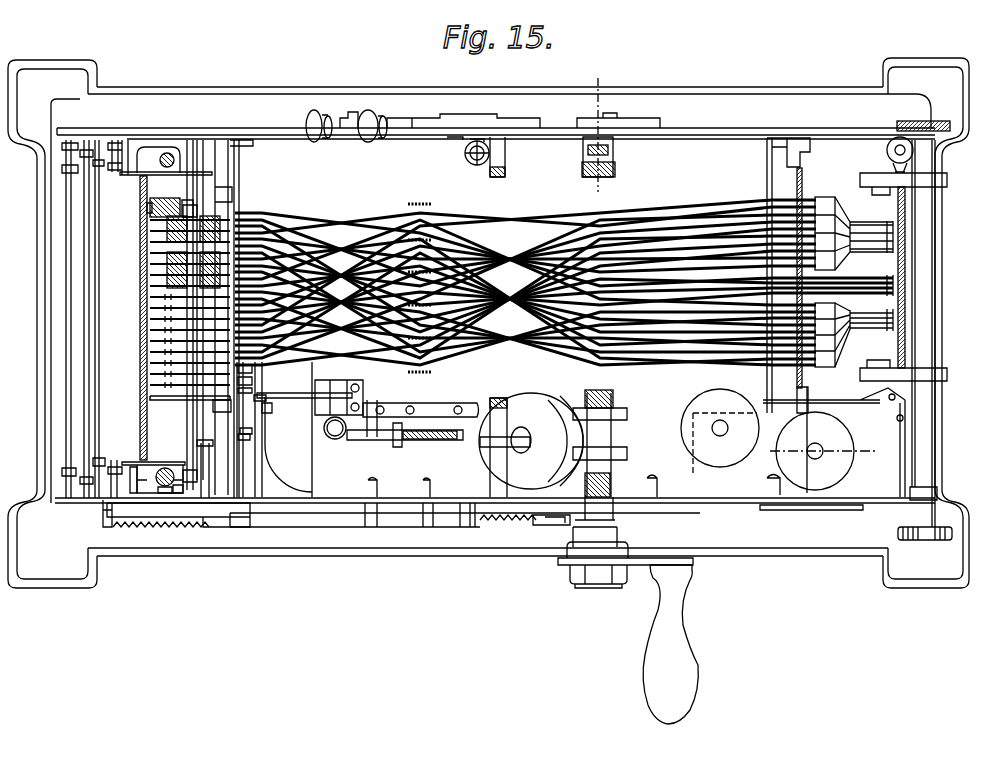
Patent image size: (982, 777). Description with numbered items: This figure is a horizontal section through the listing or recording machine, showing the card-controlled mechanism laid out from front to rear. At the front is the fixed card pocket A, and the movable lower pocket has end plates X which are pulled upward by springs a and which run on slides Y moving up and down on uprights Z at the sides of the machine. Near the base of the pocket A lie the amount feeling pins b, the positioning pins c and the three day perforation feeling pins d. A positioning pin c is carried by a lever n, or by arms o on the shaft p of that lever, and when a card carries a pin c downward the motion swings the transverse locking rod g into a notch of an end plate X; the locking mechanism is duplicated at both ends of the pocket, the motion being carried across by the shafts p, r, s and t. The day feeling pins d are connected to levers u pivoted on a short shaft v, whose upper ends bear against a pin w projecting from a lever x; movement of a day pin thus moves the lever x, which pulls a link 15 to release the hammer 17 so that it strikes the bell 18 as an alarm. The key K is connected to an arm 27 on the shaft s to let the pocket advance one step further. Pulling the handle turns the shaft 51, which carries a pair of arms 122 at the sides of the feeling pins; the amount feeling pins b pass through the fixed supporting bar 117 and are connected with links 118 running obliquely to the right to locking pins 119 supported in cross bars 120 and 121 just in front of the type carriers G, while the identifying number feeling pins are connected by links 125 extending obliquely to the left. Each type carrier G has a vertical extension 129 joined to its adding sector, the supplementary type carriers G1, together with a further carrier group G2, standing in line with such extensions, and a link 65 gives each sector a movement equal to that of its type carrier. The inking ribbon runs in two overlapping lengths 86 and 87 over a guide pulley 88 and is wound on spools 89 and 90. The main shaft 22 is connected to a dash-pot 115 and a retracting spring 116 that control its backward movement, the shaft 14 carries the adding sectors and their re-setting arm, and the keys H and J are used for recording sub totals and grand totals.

The end plates X is at (143, 172).
The lever n is at (192, 152).
The key H is at (307, 124).
The key J is at (368, 110).
The fixed supporting bar 117 is at (236, 167).
The link 65 is at (420, 207).
The retracting spring 116 is at (467, 165).
The links 125 is at (655, 194).
The cross bar 120 is at (766, 152).
The cross bar 121 is at (797, 183).
The guide pulley 88 is at (887, 152).
The inking ribbon length 87 is at (906, 203).
The inking ribbon length 86 is at (905, 201).
The type carriers G is at (868, 222).
The supplementary type carriers G1 is at (886, 252).
The contact block G2 is at (867, 330).
The vertical extension 129 is at (805, 278).
The links 118 is at (630, 372).
The main shaft 22 is at (613, 406).
The shaft 14 is at (605, 487).
The locking pins 119 is at (780, 380).
The spool 89 is at (720, 432).
The spool 90 is at (822, 451).
The dash-pot 115 is at (531, 445).
The link 15 is at (340, 393).
The hammer 17 is at (345, 433).
The arms 122 is at (245, 438).
The bell 18 is at (297, 477).
The shaft 51 is at (225, 440).
The pin w is at (255, 378).
The levers u is at (258, 393).
The lever x is at (270, 413).
The short shaft v is at (243, 432).
The transverse rod g is at (117, 177).
The positioning pins c is at (150, 203).
The arms o is at (175, 197).
The amount feeling pins b is at (146, 255).
The pocket A is at (140, 293).
The day perforation feeling pins d is at (153, 372).
The shaft r is at (140, 409).
The shaft s is at (88, 443).
The shaft t is at (66, 436).
The shaft p is at (192, 412).
The springs a is at (205, 463).
The arm 27 is at (103, 498).
The slides Y is at (150, 472).
The uprights Z is at (165, 488).
The key K is at (174, 493).